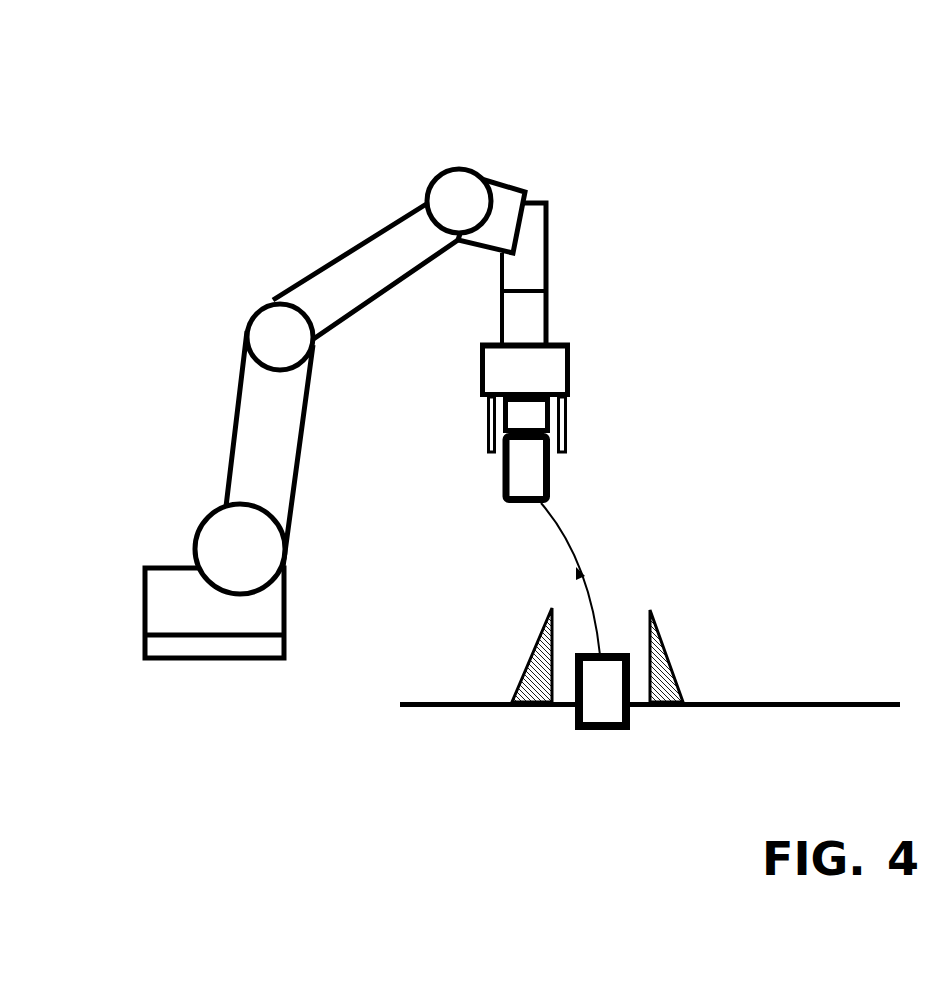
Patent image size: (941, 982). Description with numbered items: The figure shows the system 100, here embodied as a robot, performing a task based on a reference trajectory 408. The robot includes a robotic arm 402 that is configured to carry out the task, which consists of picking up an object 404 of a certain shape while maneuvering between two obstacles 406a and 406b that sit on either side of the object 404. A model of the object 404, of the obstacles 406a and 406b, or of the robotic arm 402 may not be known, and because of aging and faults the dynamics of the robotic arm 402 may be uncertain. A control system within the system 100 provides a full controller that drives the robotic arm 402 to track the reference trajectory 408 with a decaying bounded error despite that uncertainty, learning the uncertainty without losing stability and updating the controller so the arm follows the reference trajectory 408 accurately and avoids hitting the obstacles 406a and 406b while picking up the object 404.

The system 100 is at (118, 142).
The robotic arm 402 is at (357, 243).
The object 404 is at (630, 720).
The obstacle 406a is at (537, 643).
The obstacle 406b is at (660, 638).
The reference trajectory 408 is at (568, 542).